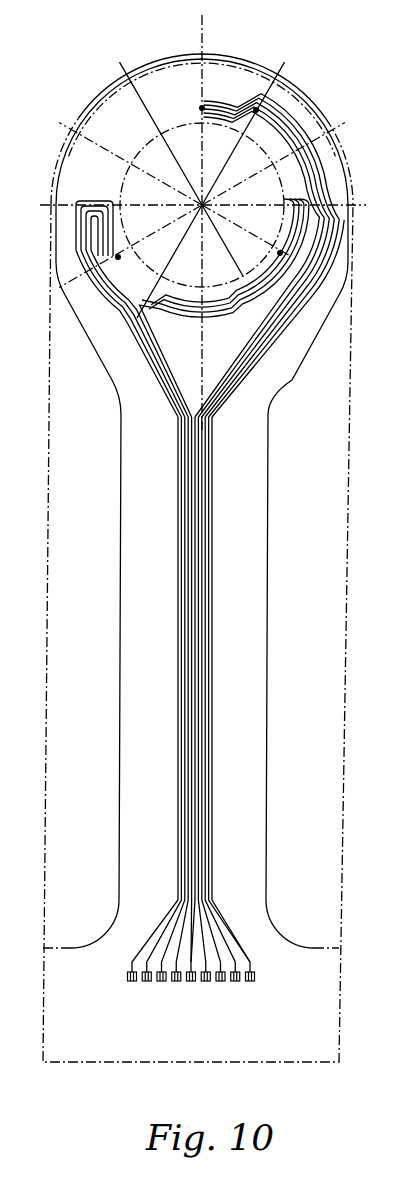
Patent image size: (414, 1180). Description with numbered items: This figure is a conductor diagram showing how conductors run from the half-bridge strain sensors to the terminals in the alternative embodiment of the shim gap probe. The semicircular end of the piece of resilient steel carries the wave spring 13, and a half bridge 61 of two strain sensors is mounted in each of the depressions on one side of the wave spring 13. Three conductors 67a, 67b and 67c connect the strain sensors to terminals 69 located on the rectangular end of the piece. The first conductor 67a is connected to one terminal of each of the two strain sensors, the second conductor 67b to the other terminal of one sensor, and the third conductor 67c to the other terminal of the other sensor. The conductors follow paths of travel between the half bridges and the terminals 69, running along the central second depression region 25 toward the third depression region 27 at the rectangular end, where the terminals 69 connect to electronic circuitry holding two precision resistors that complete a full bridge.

The wave spring 13 is at (203, 222).
The second depression region 25 is at (258, 484).
The third depression region 27 is at (318, 990).
The half bridge 61 is at (198, 108).
The first conductor 67a is at (270, 382).
The second conductor 67b is at (264, 348).
The third conductor 67c is at (314, 326).
The terminals 69 is at (138, 983).